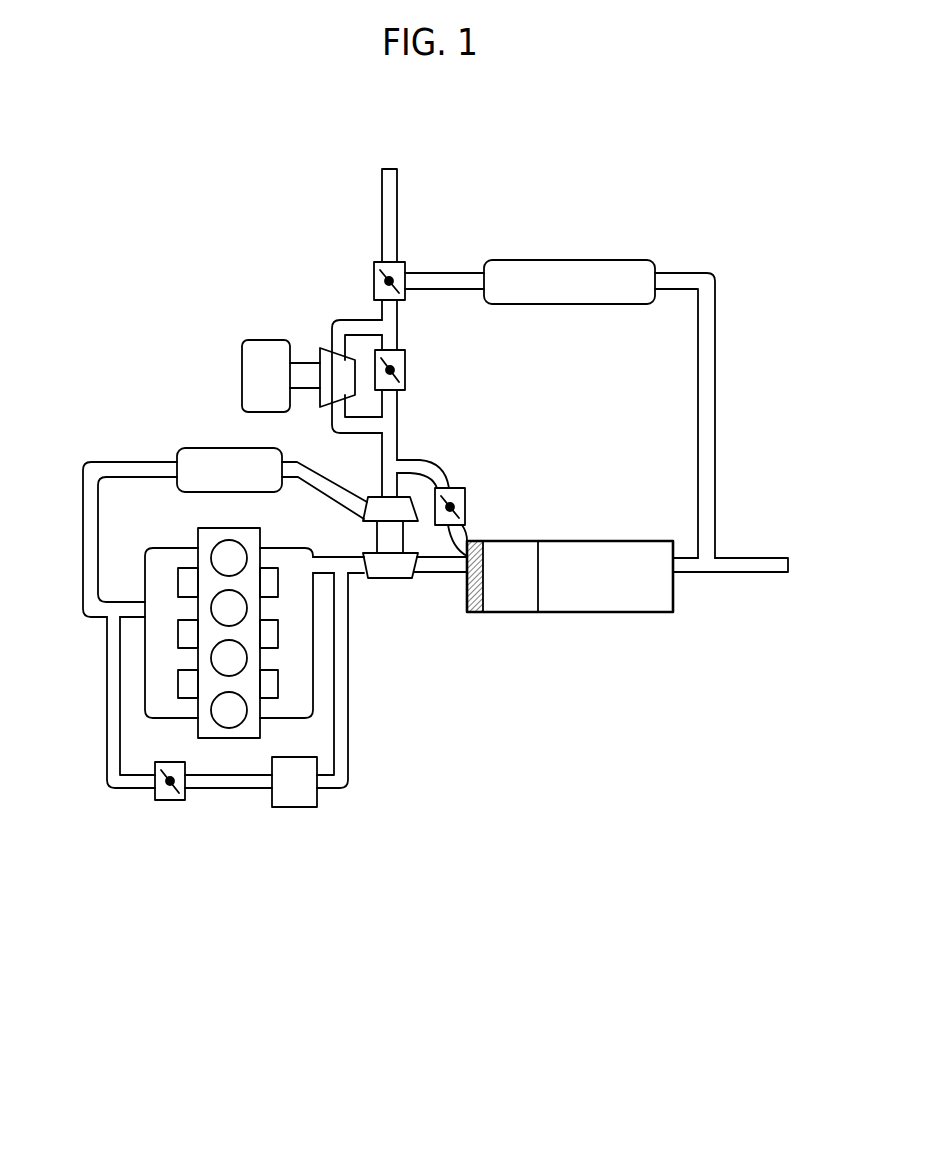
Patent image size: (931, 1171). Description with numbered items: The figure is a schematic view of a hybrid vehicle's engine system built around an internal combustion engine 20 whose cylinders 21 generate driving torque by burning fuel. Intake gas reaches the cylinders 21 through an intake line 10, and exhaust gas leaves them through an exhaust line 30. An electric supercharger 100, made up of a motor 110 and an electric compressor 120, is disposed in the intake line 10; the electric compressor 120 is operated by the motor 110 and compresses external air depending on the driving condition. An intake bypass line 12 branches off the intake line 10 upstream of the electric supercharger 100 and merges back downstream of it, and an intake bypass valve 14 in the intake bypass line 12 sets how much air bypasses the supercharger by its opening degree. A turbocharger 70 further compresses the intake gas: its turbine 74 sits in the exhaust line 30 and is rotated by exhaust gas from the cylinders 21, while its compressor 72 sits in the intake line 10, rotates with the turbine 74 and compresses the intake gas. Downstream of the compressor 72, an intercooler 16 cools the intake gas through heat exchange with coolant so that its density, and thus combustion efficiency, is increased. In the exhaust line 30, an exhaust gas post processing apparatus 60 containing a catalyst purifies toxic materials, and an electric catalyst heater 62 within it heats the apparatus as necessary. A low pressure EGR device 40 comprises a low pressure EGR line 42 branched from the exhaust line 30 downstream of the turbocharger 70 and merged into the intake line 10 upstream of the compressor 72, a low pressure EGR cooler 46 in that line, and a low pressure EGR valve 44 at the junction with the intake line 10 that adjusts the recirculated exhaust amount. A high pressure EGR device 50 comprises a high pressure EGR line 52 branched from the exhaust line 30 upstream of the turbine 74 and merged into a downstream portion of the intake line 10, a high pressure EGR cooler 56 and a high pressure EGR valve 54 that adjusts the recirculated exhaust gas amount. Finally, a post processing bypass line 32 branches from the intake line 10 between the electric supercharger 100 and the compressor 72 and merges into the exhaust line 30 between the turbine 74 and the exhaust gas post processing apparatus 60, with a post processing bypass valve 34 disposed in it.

The intake line 10 is at (335, 320).
The intake bypass line 12 is at (397, 340).
The intake bypass valve 14 is at (405, 375).
The intercooler 16 is at (207, 448).
The engine 20 is at (254, 687).
The cylinder 21 is at (245, 725).
The exhaust line 30 is at (748, 572).
The post processing bypass line 32 is at (423, 460).
The post processing bypass valve 34 is at (465, 503).
The low pressure EGR device 40 is at (544, 364).
The low pressure EGR line 42 is at (685, 380).
The low pressure EGR valve 44 is at (402, 261).
The low pressure EGR cooler 46 is at (568, 260).
The high pressure EGR device 50 is at (237, 777).
The high pressure EGR line 52 is at (352, 790).
The high pressure EGR valve 54 is at (170, 803).
The high pressure EGR cooler 56 is at (293, 807).
The exhaust gas post processing apparatus 60 is at (570, 618).
The electric catalyst heater 62 is at (476, 612).
The turbocharger 70 is at (415, 591).
The compressor 72 is at (417, 521).
The turbine 74 is at (375, 580).
The electric supercharger 100 is at (249, 363).
The motor 110 is at (242, 362).
The electric compressor 120 is at (327, 348).